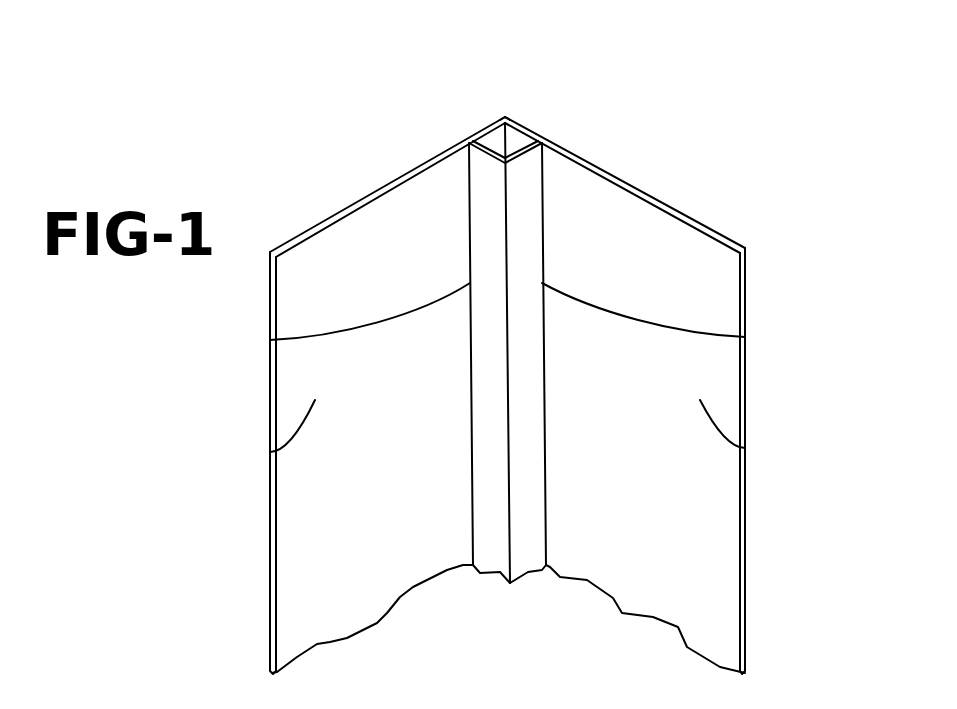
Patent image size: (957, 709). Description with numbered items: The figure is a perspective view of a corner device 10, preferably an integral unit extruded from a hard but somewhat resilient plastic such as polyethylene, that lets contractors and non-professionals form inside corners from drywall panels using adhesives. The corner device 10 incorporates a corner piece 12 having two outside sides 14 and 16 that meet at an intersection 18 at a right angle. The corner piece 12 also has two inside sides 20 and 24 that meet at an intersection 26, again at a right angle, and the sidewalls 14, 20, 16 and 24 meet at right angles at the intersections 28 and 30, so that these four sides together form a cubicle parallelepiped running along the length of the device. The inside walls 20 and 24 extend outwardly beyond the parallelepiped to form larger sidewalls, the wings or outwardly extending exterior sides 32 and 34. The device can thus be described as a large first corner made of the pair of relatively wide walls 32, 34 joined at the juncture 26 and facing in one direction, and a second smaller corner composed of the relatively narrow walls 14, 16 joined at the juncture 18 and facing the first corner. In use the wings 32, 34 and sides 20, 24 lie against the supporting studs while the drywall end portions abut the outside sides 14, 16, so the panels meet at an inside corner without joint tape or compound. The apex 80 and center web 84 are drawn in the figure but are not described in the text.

The corner device 10 is at (282, 173).
The corner piece 12 is at (484, 487).
The outside side 14 is at (525, 535).
The outside side 16 is at (492, 535).
The intersection 18 is at (510, 467).
The inside side 20 is at (523, 128).
The inside side 24 is at (483, 128).
The intersection 26 is at (504, 118).
The intersection 28 is at (745, 337).
The intersection 30 is at (270, 341).
The wing 32 is at (745, 448).
The wing 34 is at (270, 452).
The apex 80 is at (507, 118).
The center web 84 is at (507, 213).